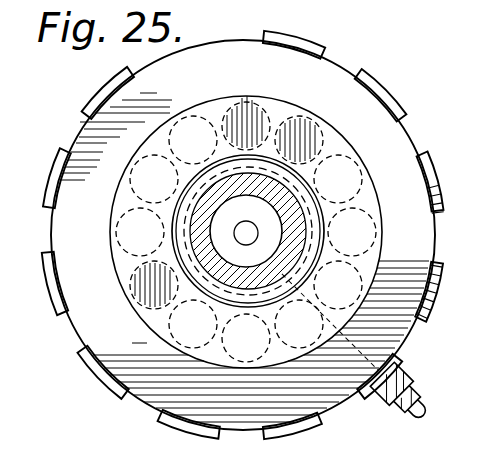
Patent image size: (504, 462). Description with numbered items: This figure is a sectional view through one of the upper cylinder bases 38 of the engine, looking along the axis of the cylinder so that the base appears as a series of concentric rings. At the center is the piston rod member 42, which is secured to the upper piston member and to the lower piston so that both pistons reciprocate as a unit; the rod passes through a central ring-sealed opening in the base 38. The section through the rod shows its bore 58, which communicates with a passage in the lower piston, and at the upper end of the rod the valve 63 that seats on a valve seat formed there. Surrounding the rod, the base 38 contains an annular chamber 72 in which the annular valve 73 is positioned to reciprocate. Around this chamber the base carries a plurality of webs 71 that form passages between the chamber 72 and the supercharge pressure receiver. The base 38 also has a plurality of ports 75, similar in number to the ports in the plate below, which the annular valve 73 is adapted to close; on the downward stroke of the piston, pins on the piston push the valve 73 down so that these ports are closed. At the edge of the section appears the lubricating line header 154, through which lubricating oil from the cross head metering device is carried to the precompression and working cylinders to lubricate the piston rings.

The upper cylinder base 38 is at (87, 147).
The webs 71 is at (420, 154).
The chamber 72 is at (408, 227).
The annular valve 73 is at (125, 303).
The ports 75 is at (251, 100).
The piston rod member 42 is at (187, 246).
The bore 58 is at (213, 222).
The valve 63 is at (247, 242).
The lubricating line header 154 is at (422, 403).